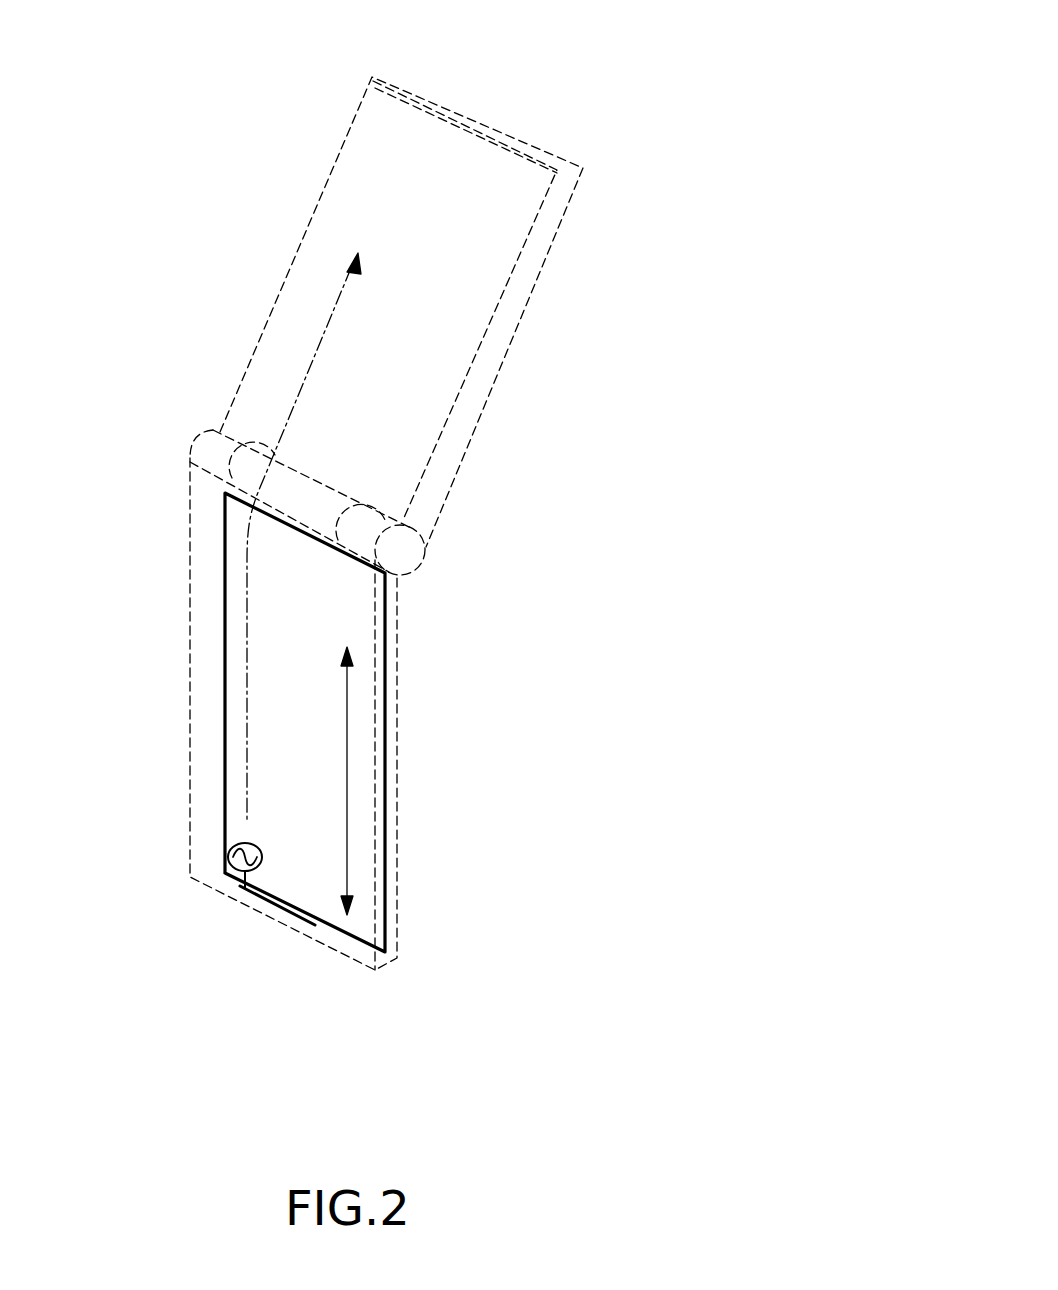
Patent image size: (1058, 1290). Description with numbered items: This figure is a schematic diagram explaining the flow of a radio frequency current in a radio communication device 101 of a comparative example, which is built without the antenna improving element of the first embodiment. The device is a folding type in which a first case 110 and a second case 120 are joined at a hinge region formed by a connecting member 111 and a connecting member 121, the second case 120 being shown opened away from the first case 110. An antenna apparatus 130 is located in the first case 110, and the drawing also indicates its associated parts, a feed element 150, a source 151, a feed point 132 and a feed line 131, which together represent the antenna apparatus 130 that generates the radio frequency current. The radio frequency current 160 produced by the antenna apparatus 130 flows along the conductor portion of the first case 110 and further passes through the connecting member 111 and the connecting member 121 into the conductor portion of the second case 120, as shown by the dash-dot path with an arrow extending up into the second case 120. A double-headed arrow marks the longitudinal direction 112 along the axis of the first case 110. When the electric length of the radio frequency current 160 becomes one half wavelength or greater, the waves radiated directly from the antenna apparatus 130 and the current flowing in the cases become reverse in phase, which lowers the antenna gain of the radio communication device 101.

The radio communication device 101 is at (686, 53).
The second case 120 is at (301, 243).
The connecting member 111 is at (195, 443).
The connecting member 121 is at (318, 498).
The first case 110 is at (190, 695).
The antenna element 150 is at (225, 765).
The feeding source 151 is at (228, 850).
The feeding point 132 is at (240, 883).
The antenna apparatus 130 is at (267, 903).
The feed line 131 is at (305, 917).
The radio frequency current 160 is at (247, 620).
The longitudinal direction 112 is at (347, 795).